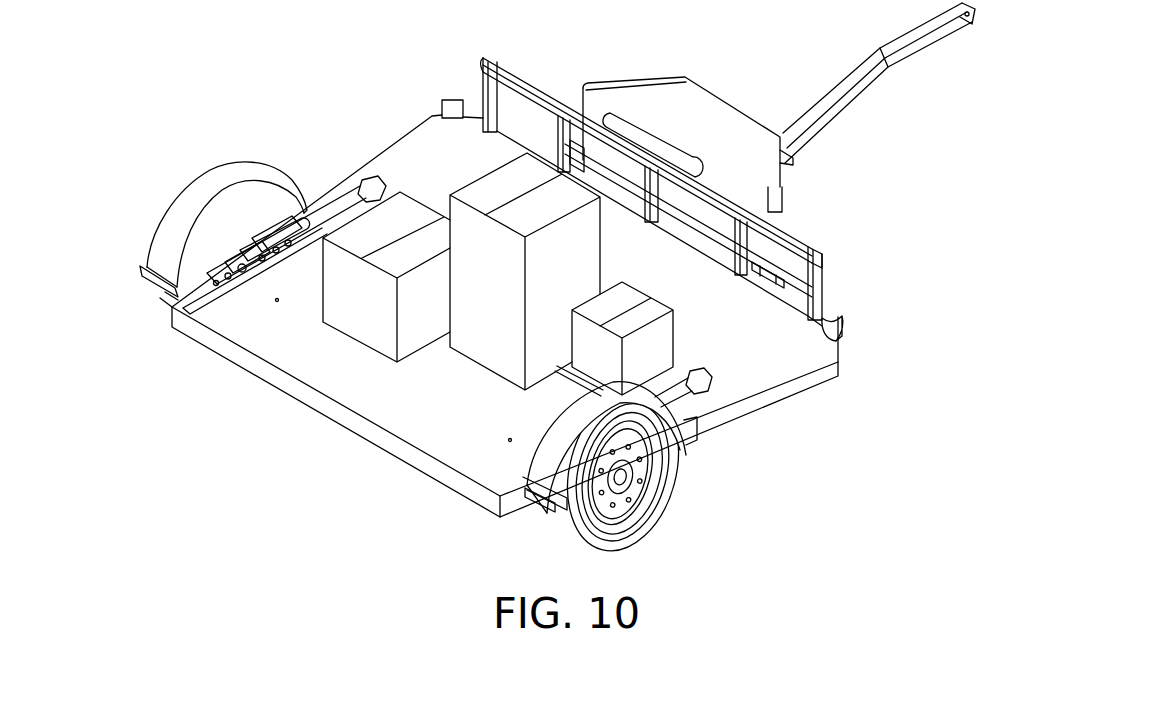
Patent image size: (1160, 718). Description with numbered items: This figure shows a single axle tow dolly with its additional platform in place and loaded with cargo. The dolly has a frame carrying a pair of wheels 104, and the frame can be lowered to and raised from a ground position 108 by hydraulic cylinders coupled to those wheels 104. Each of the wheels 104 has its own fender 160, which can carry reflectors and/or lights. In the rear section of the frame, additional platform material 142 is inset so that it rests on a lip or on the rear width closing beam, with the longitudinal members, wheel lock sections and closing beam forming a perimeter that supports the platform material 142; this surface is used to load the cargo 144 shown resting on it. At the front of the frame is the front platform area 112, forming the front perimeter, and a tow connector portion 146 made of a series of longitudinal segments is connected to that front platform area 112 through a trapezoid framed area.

The wheels 104 is at (163, 300).
The ground position 108 is at (702, 569).
The front platform area 112 is at (733, 320).
The additional platform material 142 is at (360, 377).
The cargo 144 is at (377, 313).
The tow connector portion 146 is at (837, 98).
The fender 160 is at (220, 185).